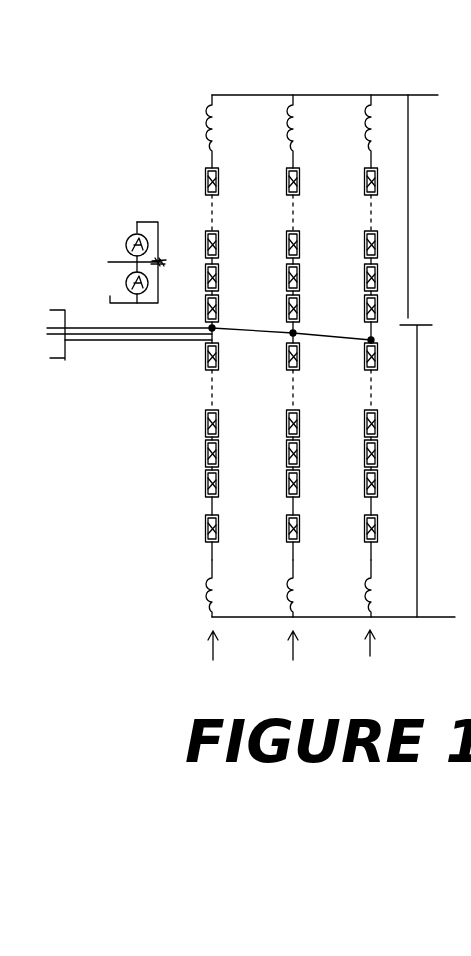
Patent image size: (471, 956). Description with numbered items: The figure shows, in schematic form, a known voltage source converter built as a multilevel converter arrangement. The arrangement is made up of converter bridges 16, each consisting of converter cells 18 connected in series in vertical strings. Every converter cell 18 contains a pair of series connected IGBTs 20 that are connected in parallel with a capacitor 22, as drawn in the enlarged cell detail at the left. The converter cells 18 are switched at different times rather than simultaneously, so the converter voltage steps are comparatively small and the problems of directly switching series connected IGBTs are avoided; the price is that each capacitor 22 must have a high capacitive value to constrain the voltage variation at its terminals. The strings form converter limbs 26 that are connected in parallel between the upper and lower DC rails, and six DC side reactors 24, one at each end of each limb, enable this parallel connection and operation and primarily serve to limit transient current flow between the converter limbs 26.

The converter bridge 16 is at (178, 444).
The converter cell 18 is at (82, 204).
The IGBT 20 is at (125, 290).
The capacitor 22 is at (163, 258).
The DC side reactor 24 is at (226, 108).
The converter limb 26 is at (286, 661).